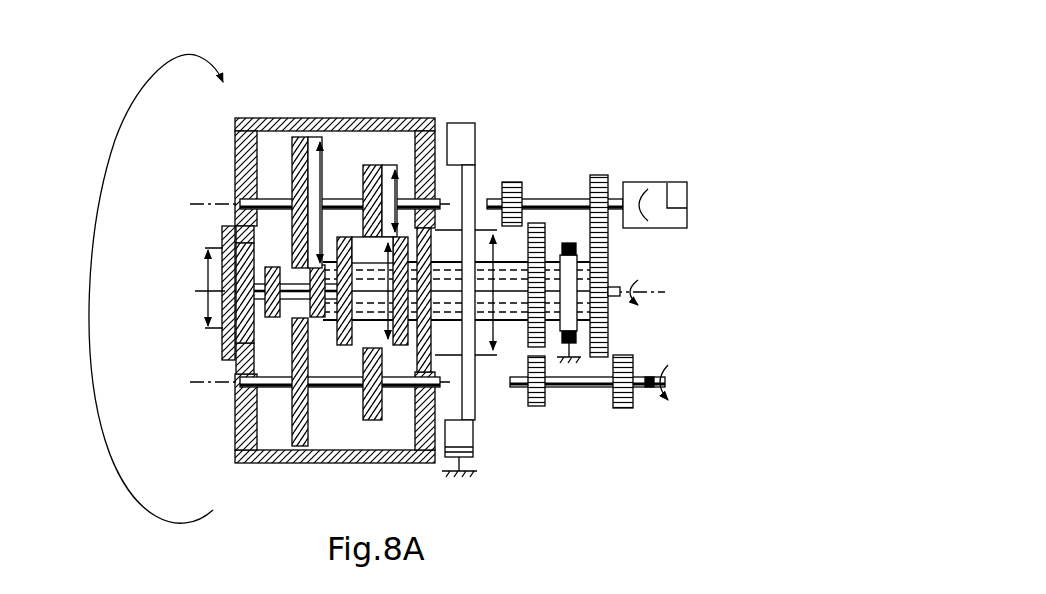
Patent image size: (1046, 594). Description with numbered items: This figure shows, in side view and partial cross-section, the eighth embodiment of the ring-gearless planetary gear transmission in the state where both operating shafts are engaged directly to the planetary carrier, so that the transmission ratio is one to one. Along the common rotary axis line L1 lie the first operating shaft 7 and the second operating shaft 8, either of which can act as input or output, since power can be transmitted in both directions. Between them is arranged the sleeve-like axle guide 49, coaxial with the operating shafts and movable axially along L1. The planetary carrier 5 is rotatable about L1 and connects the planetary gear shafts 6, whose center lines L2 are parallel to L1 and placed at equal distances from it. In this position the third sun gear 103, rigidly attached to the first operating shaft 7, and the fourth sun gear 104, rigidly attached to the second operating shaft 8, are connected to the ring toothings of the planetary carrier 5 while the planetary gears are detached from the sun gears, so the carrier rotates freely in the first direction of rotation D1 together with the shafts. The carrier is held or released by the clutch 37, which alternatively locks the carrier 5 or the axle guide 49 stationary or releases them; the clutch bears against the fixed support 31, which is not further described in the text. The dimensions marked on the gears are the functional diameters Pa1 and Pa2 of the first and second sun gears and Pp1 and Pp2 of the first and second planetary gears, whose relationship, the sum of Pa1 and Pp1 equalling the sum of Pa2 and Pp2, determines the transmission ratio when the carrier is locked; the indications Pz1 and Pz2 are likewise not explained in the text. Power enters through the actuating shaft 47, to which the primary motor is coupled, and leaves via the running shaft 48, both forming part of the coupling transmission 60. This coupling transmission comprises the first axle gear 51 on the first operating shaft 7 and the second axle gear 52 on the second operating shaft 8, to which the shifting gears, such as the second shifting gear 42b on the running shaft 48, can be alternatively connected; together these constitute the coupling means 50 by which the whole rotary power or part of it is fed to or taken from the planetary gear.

The planetary carrier 5 is at (325, 118).
The planetary gear shafts 6 is at (292, 200).
The first operating shaft 7 is at (500, 268).
The second operating shaft 8 is at (290, 282).
The frame / fixed support 31 is at (573, 387).
The clutch 37 is at (480, 130).
The second shifting gear 42b is at (623, 412).
The actuating shaft 47 is at (572, 232).
The running shaft 48 is at (580, 390).
The axle guide 49 is at (368, 285).
The coupling means 50 is at (481, 198).
The first axle gear 51 is at (530, 353).
The second axle gear 52 is at (610, 332).
The coupling transmission 60 is at (615, 163).
The third sun gear 103 is at (432, 336).
The fourth sun gear 104 is at (222, 304).
The first direction of rotation D1 is at (387, 280).
The common rotary axis line L1 is at (643, 303).
The center lines of the planetary gear shafts L2 is at (225, 200).
The functional diameter of the first sun gear Pa1 is at (388, 313).
The functional diameter of the second sun gear Pa2 is at (292, 303).
The functional diameter of the first planetary gears Pp1 is at (440, 245).
The functional diameter of the second planetary gears Pp2 is at (318, 160).
The gear z1 Pz1 is at (487, 370).
The gear z2 Pz2 is at (194, 300).